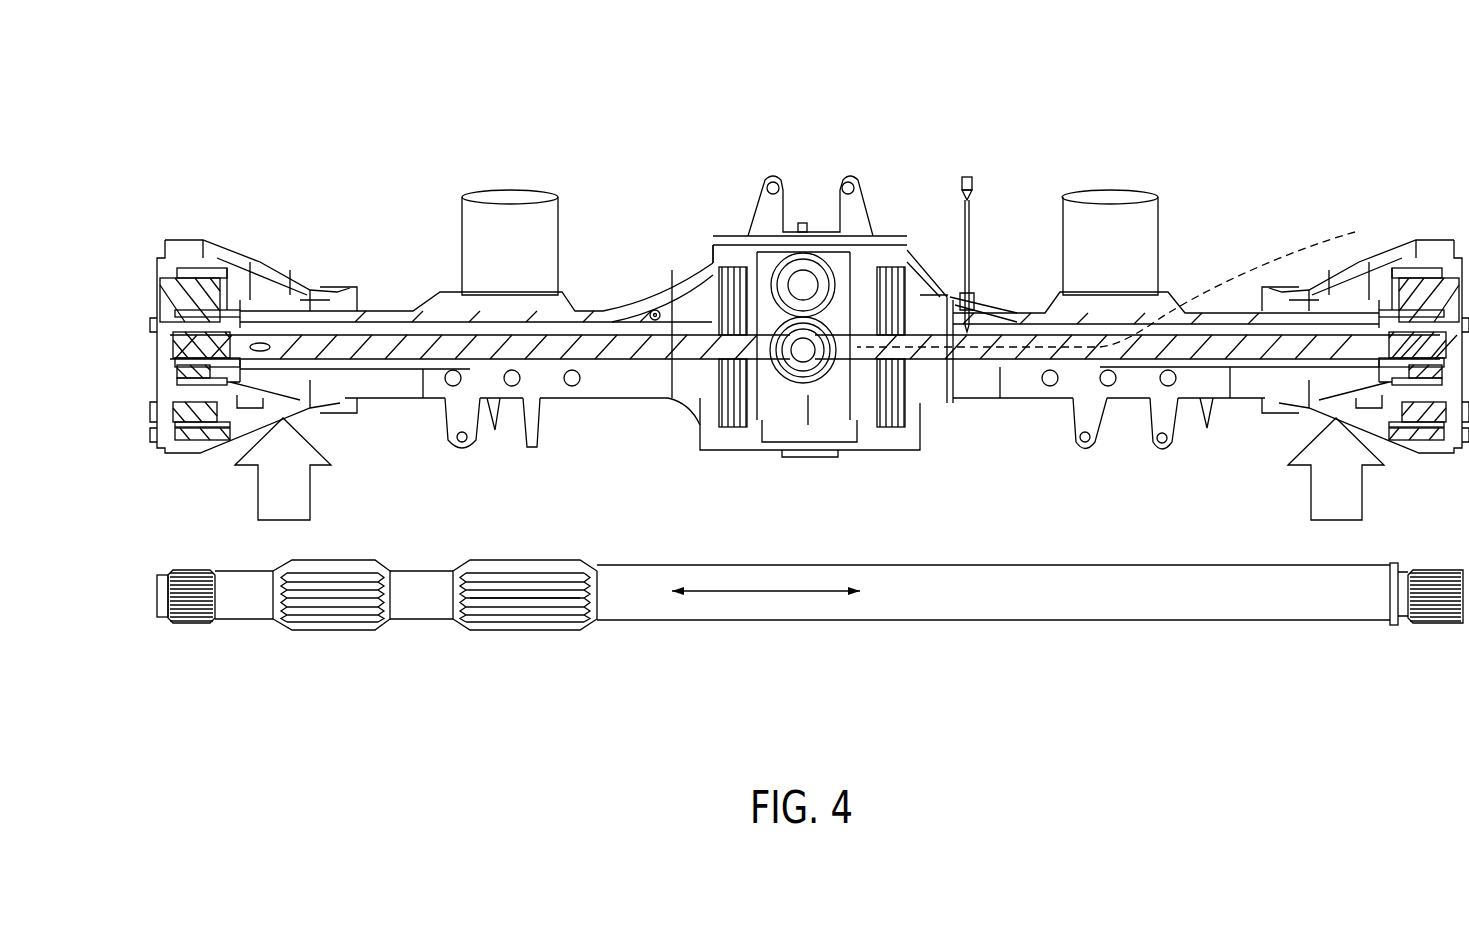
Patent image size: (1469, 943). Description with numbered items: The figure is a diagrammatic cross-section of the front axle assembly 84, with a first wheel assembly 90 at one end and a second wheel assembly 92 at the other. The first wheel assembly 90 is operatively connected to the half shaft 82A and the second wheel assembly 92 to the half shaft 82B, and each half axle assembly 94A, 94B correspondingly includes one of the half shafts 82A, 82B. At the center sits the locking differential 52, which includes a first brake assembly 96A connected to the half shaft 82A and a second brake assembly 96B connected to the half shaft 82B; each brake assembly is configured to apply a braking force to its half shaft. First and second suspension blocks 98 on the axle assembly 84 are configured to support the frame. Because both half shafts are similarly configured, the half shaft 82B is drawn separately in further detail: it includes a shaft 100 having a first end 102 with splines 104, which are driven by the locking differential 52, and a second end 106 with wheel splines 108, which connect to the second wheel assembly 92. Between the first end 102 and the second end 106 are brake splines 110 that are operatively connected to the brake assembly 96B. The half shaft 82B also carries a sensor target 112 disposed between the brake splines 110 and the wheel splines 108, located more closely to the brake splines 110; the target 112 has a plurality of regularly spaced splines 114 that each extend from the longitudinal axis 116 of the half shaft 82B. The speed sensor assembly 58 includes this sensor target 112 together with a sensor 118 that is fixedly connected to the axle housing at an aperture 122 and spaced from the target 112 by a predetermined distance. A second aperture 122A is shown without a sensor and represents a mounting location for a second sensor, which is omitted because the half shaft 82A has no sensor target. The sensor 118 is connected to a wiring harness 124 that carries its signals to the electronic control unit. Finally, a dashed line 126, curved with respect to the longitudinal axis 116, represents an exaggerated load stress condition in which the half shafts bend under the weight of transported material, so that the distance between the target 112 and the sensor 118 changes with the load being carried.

The locking differential 52 is at (856, 190).
The speed sensor assembly 58 is at (990, 292).
The half shaft 82A is at (578, 338).
The half shaft 82B is at (1100, 350).
The front axle assembly 84 is at (1055, 122).
The first wheel assembly 90 is at (215, 242).
The second wheel assembly 92 is at (1422, 242).
The half axle assembly 94A is at (600, 420).
The half axle assembly 94B is at (1225, 415).
The first brake assembly 96A is at (733, 432).
The second brake assembly 96B is at (878, 432).
The suspension blocks 98 is at (505, 195).
The shaft 100 is at (1002, 604).
The first end 102 is at (380, 296).
The splines 104 is at (188, 572).
The second end 106 is at (1445, 640).
The wheel splines 108 is at (1432, 575).
The brake splines 110 is at (327, 655).
The sensor target 112 is at (524, 655).
The splines 114 is at (528, 575).
The longitudinal axis 116 is at (735, 596).
The sensor 118 is at (962, 300).
The aperture 122 is at (992, 298).
The aperture 122A is at (652, 302).
The wiring harness 124 is at (975, 230).
The dashed line 126 is at (1220, 308).